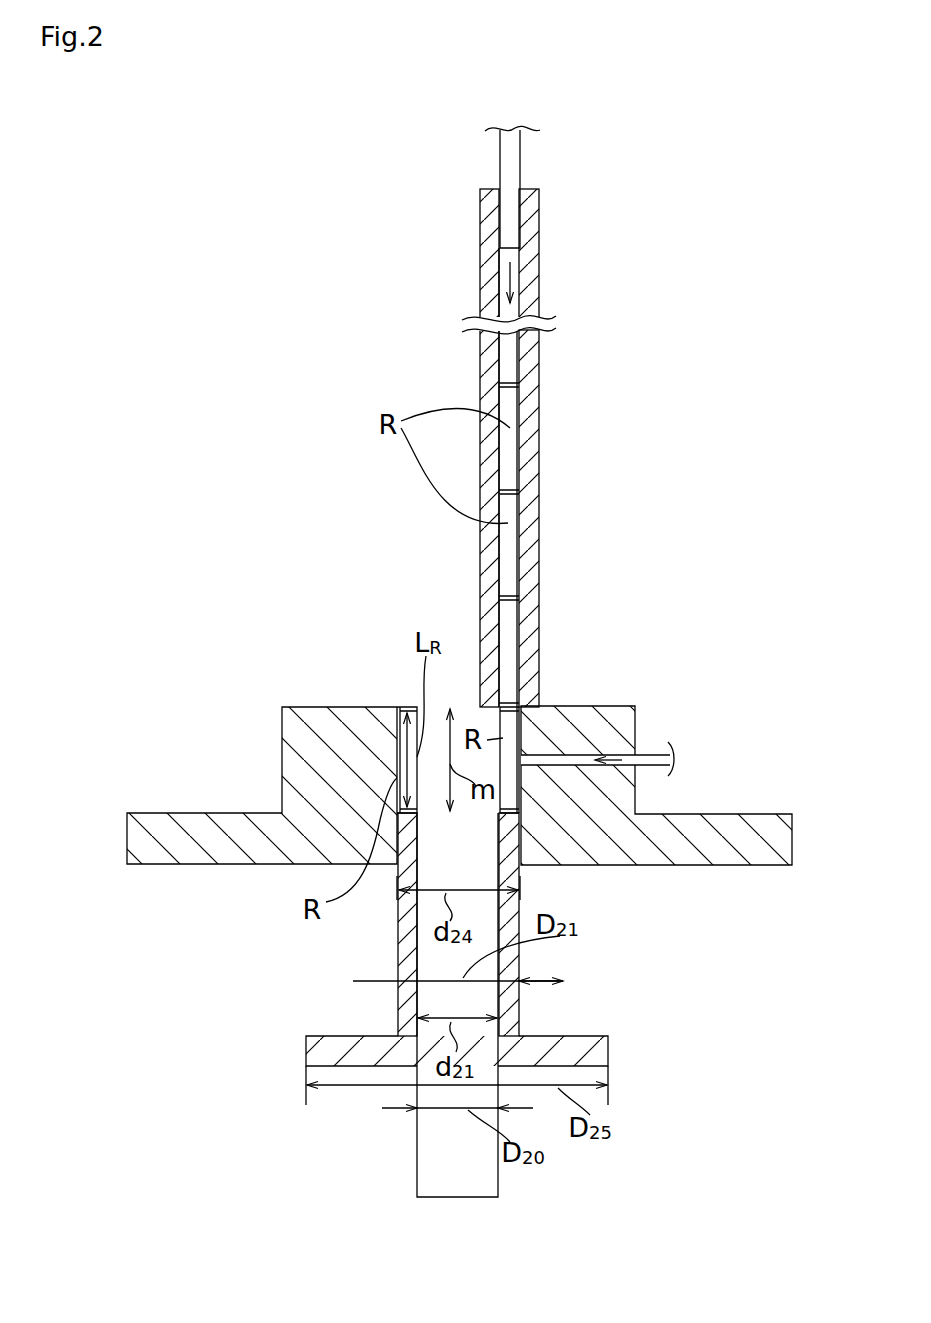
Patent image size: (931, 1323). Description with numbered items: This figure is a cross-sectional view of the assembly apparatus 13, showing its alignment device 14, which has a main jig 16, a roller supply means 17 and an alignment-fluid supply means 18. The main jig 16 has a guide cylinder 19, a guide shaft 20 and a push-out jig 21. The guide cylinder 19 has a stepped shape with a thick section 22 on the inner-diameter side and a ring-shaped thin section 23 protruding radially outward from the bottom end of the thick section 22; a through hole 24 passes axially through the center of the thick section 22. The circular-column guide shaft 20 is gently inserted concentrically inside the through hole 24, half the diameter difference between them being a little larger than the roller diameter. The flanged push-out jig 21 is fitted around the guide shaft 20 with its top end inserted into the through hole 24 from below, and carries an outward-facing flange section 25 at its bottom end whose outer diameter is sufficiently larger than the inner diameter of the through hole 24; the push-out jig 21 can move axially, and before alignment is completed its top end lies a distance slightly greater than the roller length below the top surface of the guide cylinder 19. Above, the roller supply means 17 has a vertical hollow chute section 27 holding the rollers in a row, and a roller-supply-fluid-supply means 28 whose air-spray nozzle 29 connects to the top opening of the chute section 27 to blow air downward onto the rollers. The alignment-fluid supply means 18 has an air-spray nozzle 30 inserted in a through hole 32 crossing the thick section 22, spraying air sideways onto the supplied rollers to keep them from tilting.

The assembly apparatus 13 is at (628, 670).
The alignment device 14 is at (652, 677).
The main jig 16 is at (277, 702).
The roller supply means 17 is at (530, 390).
The alignment-fluid supply means 18 is at (645, 752).
The guide cylinder 19 is at (302, 742).
The guide shaft 20 is at (432, 1126).
The push-out jig 21 is at (404, 948).
The thick section 22 is at (335, 717).
The thin section 23 is at (140, 832).
The through hole 24 is at (403, 778).
The outward-facing flange section 25 is at (320, 1052).
The chute section 27 is at (528, 508).
The roller-supply-fluid-supply means 28 is at (513, 141).
The air-spray nozzle 29 is at (513, 212).
The air-spray nozzle 30 is at (550, 758).
The through hole 32 is at (578, 760).